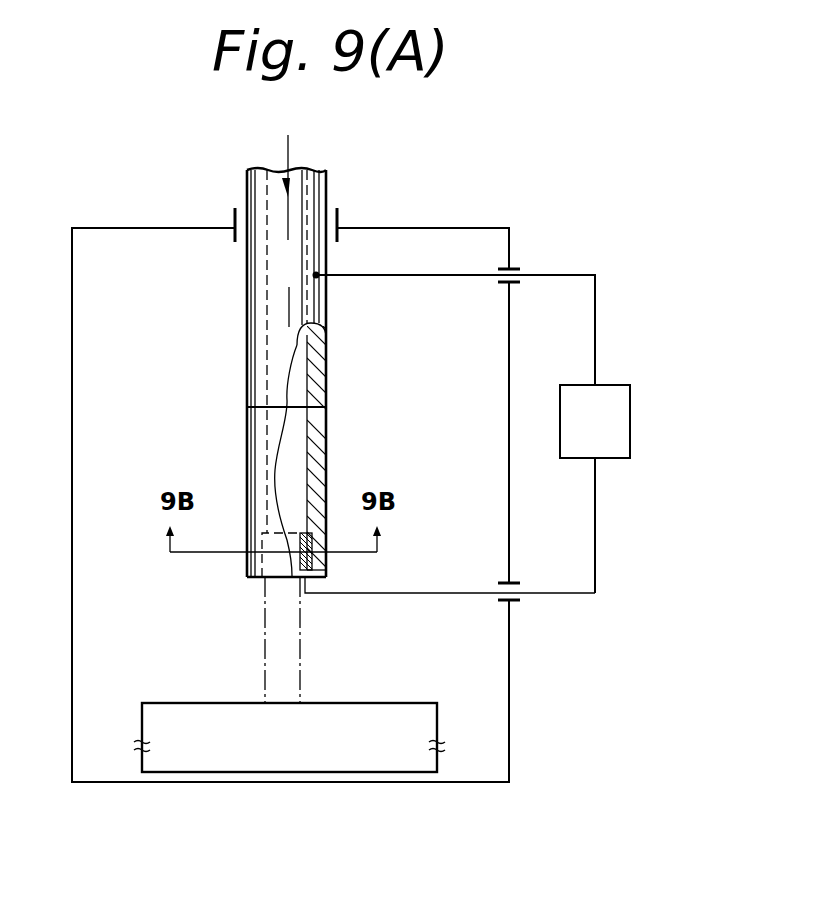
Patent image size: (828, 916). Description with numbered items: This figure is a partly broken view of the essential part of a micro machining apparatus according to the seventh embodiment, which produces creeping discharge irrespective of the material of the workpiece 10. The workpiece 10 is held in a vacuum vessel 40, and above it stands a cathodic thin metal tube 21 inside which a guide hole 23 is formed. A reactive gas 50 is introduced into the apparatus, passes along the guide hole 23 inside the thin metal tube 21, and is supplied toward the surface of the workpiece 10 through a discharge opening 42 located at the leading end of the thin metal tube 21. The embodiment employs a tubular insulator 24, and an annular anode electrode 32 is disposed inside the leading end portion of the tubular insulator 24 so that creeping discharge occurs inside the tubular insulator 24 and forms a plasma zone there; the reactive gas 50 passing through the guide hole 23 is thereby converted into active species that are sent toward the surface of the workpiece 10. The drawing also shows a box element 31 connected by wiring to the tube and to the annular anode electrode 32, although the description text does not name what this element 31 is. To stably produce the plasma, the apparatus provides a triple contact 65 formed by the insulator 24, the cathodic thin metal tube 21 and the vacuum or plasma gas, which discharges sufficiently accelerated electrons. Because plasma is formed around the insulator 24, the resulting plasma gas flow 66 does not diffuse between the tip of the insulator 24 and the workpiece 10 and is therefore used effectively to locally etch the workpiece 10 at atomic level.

The workpiece 10 is at (408, 712).
The thin metal tube 21 is at (288, 300).
The guide hole 23 is at (300, 355).
The tubular insulator 24 is at (313, 453).
The control unit 31 is at (630, 440).
The annular anode electrode 32 is at (307, 563).
The vacuum vessel 40 is at (510, 688).
The discharge opening 42 is at (283, 577).
The reactive gas 50 is at (290, 150).
The triple contact 65 is at (307, 408).
The plasma gas flow 66 is at (272, 658).